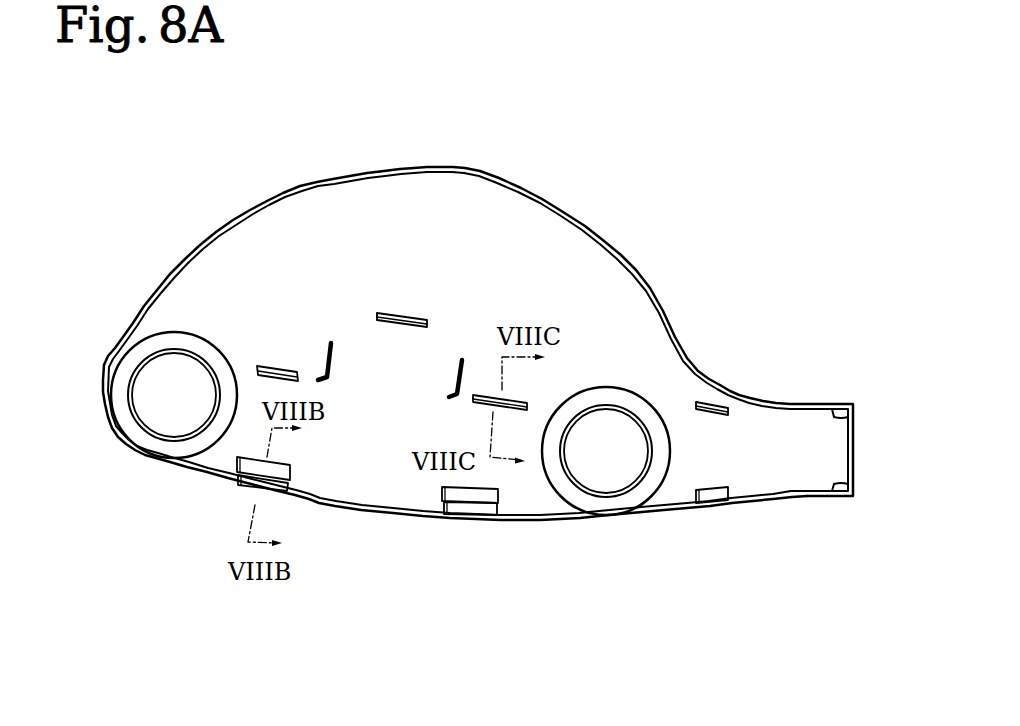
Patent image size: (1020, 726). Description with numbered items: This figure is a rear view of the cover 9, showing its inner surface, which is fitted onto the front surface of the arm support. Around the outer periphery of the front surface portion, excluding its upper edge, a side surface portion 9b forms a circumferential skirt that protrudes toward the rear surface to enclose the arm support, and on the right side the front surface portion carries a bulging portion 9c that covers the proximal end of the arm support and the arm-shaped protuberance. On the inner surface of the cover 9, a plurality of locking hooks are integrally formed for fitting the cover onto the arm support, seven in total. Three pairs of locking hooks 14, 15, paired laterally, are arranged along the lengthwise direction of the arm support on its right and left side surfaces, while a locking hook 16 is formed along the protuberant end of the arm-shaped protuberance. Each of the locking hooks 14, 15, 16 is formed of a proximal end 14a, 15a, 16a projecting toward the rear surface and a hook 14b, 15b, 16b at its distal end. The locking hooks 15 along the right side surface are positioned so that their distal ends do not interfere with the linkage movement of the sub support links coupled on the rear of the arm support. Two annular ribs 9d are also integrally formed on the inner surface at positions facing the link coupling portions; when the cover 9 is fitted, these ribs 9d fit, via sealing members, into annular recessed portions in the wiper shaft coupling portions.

The cover 9 is at (478, 285).
The side surface portion 9b is at (647, 297).
The bulging portion 9c is at (450, 192).
The annular ribs 9d is at (145, 428).
The locking hooks 14 is at (482, 564).
The proximal ends 14a is at (467, 513).
The hooks 14b is at (442, 493).
The locking hooks 15 is at (459, 276).
The proximal ends 15a is at (292, 370).
The hooks 15b is at (266, 377).
The locking hook 16 is at (401, 207).
The proximal end 16a is at (425, 320).
The hook 16b is at (378, 323).